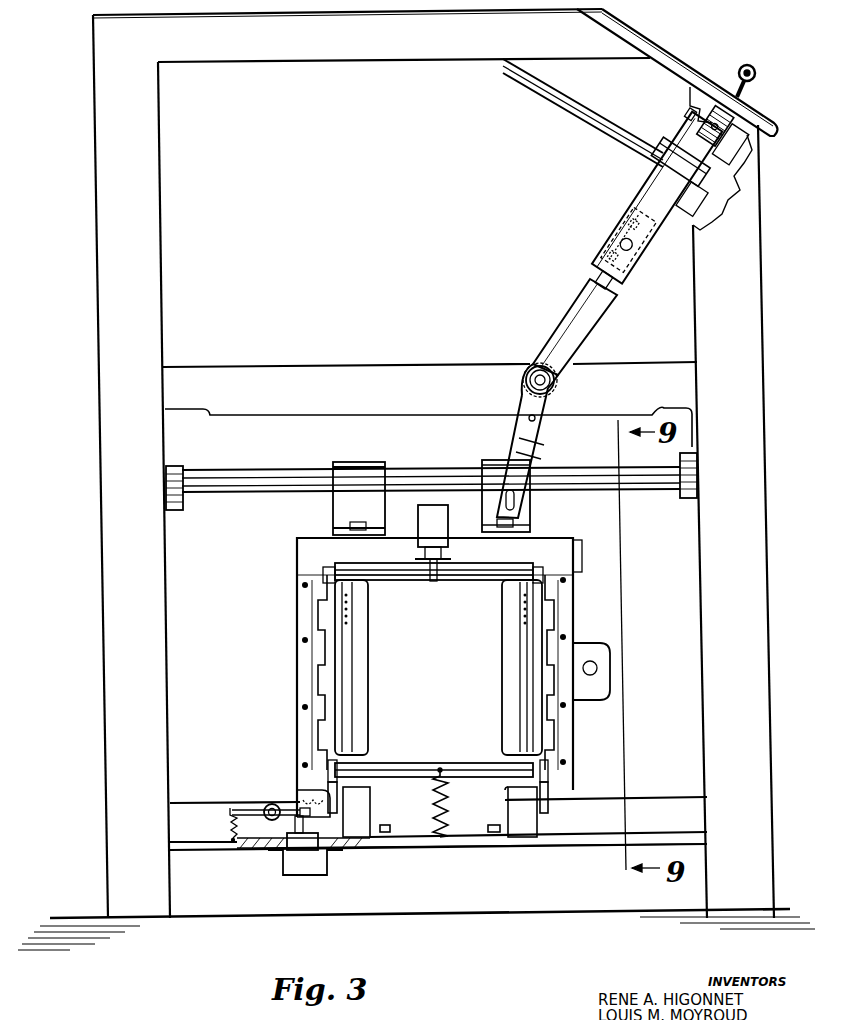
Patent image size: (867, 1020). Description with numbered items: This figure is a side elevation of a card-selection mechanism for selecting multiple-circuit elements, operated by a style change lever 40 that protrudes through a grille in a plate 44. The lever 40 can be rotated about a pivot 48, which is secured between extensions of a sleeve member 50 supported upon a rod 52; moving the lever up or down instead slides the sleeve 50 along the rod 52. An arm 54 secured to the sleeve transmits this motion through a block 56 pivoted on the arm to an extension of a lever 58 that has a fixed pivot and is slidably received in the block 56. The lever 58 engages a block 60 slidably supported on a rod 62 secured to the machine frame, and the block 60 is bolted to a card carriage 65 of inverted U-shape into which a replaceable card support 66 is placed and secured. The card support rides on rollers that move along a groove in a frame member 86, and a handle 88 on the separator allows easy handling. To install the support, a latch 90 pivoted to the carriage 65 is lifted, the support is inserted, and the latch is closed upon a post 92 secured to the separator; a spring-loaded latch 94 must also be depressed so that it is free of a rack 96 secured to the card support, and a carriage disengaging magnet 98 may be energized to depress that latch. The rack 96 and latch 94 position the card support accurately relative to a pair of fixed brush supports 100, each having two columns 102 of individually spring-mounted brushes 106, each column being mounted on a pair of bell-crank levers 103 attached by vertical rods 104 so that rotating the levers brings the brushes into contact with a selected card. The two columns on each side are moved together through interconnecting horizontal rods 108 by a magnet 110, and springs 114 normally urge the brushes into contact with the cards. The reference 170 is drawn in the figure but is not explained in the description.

The style change lever 40 is at (757, 73).
The plate 44 is at (680, 64).
The pivot 48 is at (700, 137).
The sleeve member 50 is at (660, 162).
The rod 52 is at (582, 105).
The arm 54 is at (648, 203).
The block 56 is at (604, 255).
The lever 58 is at (572, 299).
The block 60 is at (487, 462).
The rod 62 is at (250, 476).
The card carriage 65 is at (549, 543).
The card support 66 is at (585, 612).
The frame member 86 is at (655, 795).
The handle 88 is at (593, 648).
The latch 90 is at (580, 558).
The post 92 is at (580, 586).
The spring-loaded latch 94 is at (288, 805).
The rack 96 is at (300, 790).
The carriage disengaging magnet 98 is at (290, 858).
The brush support 100 is at (466, 690).
The column 102 is at (520, 656).
The bell-crank lever 103 is at (328, 615).
The vertical rod 104 is at (322, 668).
The brush 106 is at (348, 618).
The horizontal rod 108 is at (500, 580).
The magnet 110 is at (412, 528).
The spring 114 is at (434, 801).
The cover 170 is at (725, 150).